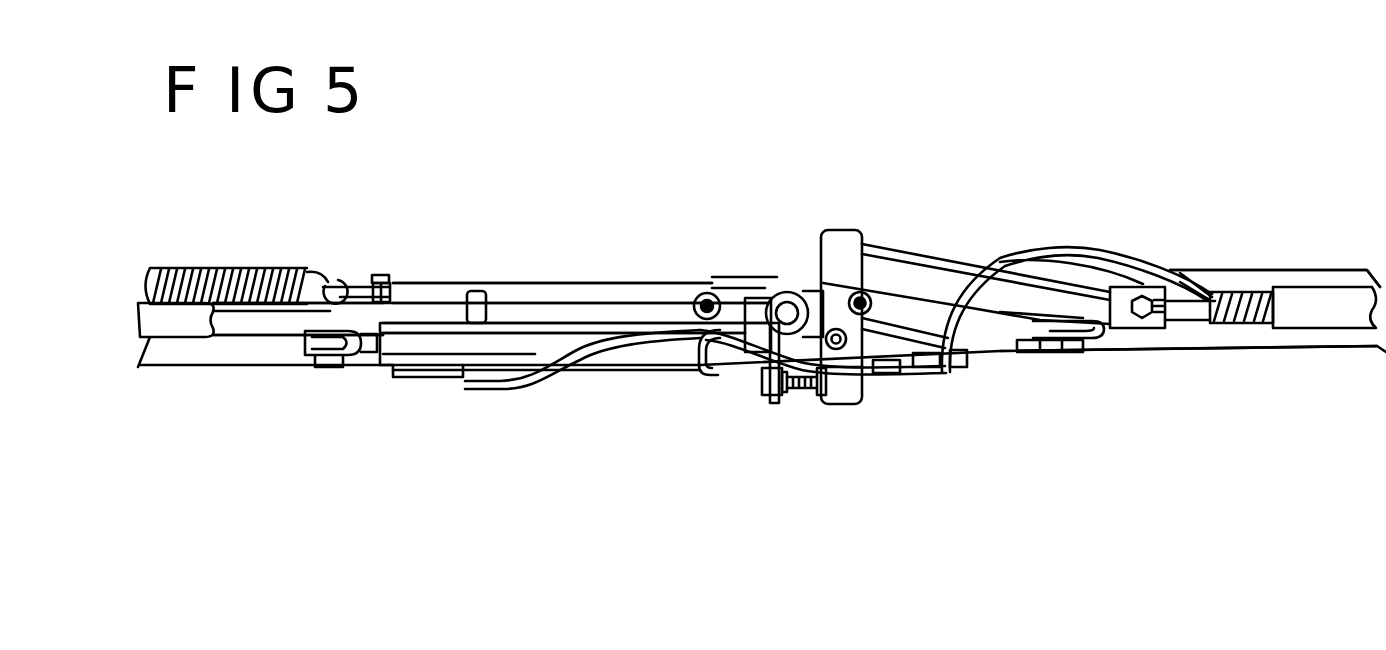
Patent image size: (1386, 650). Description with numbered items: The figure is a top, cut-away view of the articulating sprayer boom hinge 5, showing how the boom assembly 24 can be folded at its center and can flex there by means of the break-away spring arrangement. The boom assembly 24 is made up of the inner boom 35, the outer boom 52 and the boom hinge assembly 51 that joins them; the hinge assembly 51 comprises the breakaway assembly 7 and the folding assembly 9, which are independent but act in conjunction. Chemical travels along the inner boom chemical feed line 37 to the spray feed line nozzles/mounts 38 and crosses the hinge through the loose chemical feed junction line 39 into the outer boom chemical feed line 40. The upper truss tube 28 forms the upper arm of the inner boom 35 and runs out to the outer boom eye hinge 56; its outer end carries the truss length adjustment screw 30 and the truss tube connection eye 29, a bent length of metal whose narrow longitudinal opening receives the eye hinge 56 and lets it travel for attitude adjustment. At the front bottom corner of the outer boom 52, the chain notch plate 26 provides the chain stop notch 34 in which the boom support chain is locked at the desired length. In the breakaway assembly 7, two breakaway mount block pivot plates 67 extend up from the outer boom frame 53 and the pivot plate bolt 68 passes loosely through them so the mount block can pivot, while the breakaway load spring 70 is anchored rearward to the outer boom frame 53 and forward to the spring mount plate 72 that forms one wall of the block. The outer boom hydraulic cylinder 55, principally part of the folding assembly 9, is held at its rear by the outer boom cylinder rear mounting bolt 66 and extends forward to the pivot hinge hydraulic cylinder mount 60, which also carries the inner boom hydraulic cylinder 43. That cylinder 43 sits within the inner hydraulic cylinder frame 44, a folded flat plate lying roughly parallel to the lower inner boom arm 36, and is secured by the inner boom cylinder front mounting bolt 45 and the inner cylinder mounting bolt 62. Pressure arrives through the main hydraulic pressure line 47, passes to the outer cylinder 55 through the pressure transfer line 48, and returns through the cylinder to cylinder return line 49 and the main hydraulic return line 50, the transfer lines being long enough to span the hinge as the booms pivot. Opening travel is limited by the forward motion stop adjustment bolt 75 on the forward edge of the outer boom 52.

The articulating sprayer boom hinge 5 is at (565, 155).
The breakaway assembly 7 is at (305, 438).
The folding assembly 9 is at (866, 449).
The boom assembly 24 is at (1188, 212).
The chain notch plate 26 is at (737, 386).
The upper truss tube 28 is at (1337, 281).
The truss tube connection eye 29 is at (805, 285).
The truss length adjustment screw 30 is at (1252, 282).
The chain stop notch 34 is at (727, 378).
The inner boom 35 is at (1013, 407).
The lower inner boom arm 36 is at (1312, 350).
The inner boom chemical feed line 37 is at (1191, 312).
The spray feed line nozzles/mounts 38 is at (481, 296).
The chemical feed junction line 39 is at (701, 289).
The outer boom chemical feed line 40 is at (240, 341).
The inner boom hydraulic cylinder 43 is at (1045, 332).
The inner hydraulic cylinder frame 44 is at (922, 250).
The inner boom cylinder front mounting bolt 45 is at (1144, 294).
The main hydraulic pressure line 47 is at (1065, 239).
The pressure transfer line 48 is at (507, 392).
The cylinder to cylinder return line 49 is at (686, 378).
The main hydraulic return line 50 is at (960, 262).
The boom hinge assembly 51 is at (835, 210).
The outer boom 52 is at (619, 250).
The outer boom frame 53 is at (178, 346).
The outer boom hydraulic cylinder 55 is at (460, 341).
The outer boom eye hinge 56 is at (777, 286).
The pivot hinge hydraulic cylinder mount 60 is at (813, 375).
The inner cylinder mounting bolt 62 is at (870, 377).
The outer boom cylinder rear mounting bolt 66 is at (331, 378).
The breakaway mount block pivot plates 67 is at (360, 276).
The pivot plate bolt 68 is at (390, 266).
The breakaway load spring 70 is at (178, 254).
The spring mount plate 72 is at (322, 276).
The forward motion stop adjustment bolt 75 is at (806, 398).